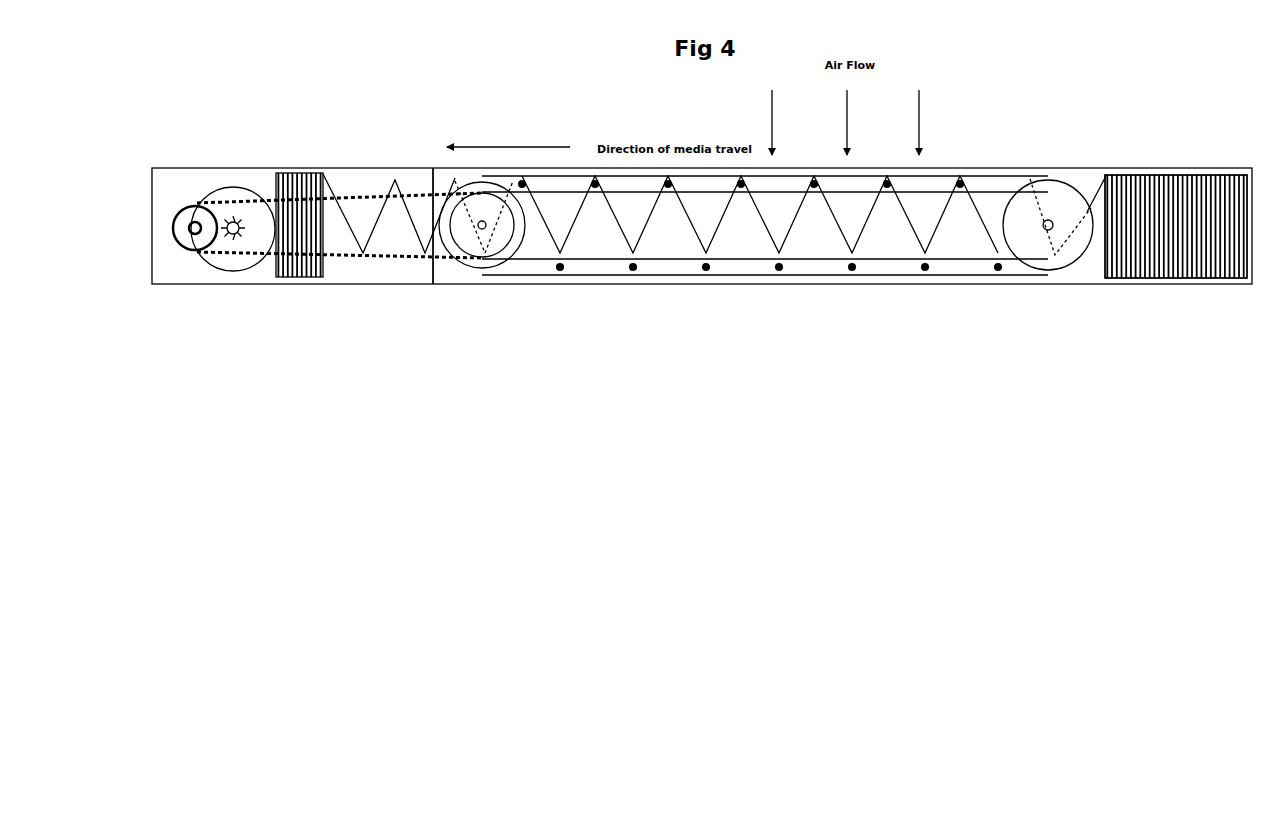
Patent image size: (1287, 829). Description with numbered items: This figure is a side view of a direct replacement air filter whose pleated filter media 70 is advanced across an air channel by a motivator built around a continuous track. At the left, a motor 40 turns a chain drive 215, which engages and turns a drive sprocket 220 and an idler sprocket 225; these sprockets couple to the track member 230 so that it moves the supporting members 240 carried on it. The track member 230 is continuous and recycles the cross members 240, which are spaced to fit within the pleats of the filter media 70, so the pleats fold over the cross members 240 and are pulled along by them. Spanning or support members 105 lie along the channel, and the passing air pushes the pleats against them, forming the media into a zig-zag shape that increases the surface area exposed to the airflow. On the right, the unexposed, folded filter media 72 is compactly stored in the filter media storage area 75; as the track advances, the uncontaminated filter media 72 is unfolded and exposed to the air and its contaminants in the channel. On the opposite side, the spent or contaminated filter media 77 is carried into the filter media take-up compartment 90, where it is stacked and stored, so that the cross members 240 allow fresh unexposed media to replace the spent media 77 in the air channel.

The motor 40 is at (253, 185).
The filter media take-up compartment 90 is at (427, 166).
The filter media storage area 75 is at (1103, 156).
The contaminated filter media 77 is at (283, 275).
The chain drive 215 is at (343, 263).
The drive sprocket 220 is at (458, 268).
The supporting members 240 is at (564, 196).
The filter media 70 is at (758, 225).
The track member 230 is at (876, 267).
The spanning or support members 105 is at (957, 197).
The idler sprocket 225 is at (1037, 250).
The uncontaminated filter media 72 is at (1178, 232).